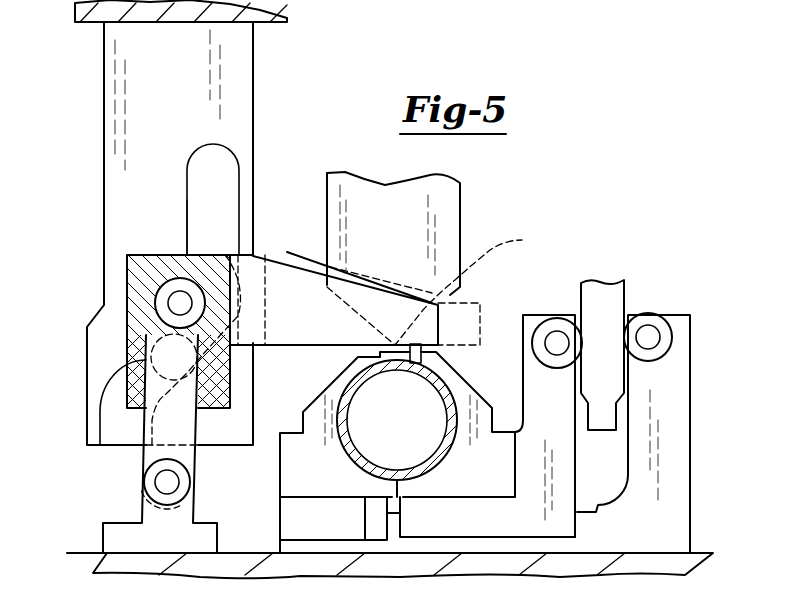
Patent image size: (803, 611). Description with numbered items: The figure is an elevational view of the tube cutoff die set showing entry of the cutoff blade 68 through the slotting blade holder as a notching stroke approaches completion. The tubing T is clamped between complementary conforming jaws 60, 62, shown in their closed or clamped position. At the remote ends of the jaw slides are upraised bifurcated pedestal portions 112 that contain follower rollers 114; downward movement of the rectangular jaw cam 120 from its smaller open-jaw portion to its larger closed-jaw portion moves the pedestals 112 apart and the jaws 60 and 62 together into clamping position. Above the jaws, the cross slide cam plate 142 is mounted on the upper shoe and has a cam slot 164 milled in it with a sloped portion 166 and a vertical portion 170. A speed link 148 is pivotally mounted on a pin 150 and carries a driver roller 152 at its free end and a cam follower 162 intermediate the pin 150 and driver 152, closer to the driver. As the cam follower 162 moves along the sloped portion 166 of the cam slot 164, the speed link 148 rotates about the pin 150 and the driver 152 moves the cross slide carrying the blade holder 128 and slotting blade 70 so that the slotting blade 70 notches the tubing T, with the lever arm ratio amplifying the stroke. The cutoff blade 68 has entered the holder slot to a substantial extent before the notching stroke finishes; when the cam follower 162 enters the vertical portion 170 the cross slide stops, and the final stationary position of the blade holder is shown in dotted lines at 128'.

The cross slide cam plate 142 is at (254, 60).
The cam slot 164 is at (188, 165).
The vertical portion 170 is at (227, 186).
The blade holder 128 is at (355, 276).
The cutoff blade 68 is at (406, 226).
The blade holder final position 128' is at (453, 282).
The driver roller 152 is at (158, 292).
The cam follower 162 is at (237, 316).
The sloped portion 166 is at (131, 361).
The speed link 148 is at (198, 428).
The pin 150 is at (188, 486).
The jaw 62 is at (330, 393).
The jaw 60 is at (470, 386).
The slotting blade 70 is at (415, 362).
The tubing T is at (347, 420).
The bifurcated pedestal portions 112 is at (527, 328).
The jaw cam 120 is at (623, 283).
The follower rollers 114 is at (644, 314).